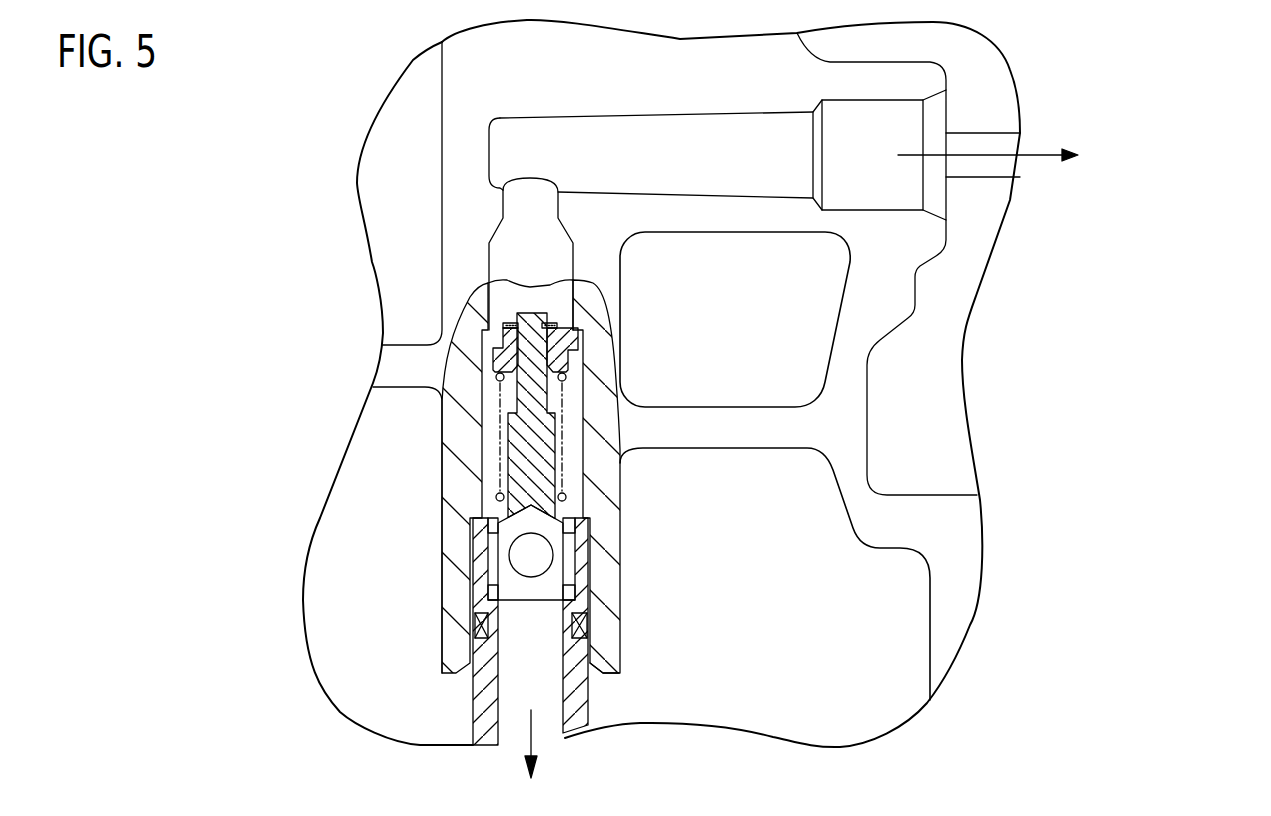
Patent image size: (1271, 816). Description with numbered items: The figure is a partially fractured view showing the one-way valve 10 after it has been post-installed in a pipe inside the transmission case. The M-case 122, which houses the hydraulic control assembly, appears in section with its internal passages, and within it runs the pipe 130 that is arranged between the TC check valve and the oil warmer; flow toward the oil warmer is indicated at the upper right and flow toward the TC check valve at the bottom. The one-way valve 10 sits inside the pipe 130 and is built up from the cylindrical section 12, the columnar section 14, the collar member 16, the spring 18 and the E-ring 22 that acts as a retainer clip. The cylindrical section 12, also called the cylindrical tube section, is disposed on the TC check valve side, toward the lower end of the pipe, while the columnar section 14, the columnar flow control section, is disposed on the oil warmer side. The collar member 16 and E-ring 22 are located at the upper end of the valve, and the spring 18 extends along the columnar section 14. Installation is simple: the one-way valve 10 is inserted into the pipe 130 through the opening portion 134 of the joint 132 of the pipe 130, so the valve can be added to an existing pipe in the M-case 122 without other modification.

The one-way valve 10 is at (537, 494).
The cylindrical section 12 is at (482, 597).
The columnar section 14 is at (542, 488).
The collar member 16 is at (578, 333).
The spring 18 is at (500, 470).
The E-ring 22 is at (506, 322).
The M-case 122 is at (386, 61).
The pipe 130 is at (610, 648).
The joint 132 is at (455, 676).
The opening portion 134 is at (590, 668).